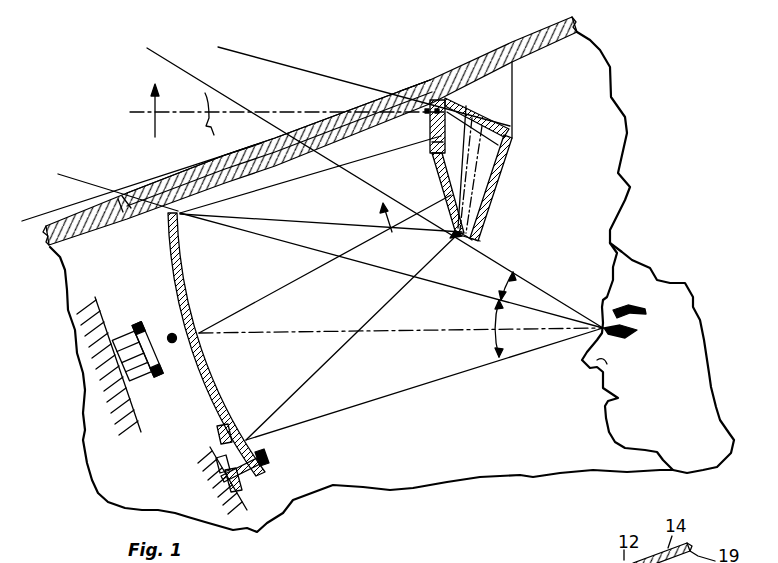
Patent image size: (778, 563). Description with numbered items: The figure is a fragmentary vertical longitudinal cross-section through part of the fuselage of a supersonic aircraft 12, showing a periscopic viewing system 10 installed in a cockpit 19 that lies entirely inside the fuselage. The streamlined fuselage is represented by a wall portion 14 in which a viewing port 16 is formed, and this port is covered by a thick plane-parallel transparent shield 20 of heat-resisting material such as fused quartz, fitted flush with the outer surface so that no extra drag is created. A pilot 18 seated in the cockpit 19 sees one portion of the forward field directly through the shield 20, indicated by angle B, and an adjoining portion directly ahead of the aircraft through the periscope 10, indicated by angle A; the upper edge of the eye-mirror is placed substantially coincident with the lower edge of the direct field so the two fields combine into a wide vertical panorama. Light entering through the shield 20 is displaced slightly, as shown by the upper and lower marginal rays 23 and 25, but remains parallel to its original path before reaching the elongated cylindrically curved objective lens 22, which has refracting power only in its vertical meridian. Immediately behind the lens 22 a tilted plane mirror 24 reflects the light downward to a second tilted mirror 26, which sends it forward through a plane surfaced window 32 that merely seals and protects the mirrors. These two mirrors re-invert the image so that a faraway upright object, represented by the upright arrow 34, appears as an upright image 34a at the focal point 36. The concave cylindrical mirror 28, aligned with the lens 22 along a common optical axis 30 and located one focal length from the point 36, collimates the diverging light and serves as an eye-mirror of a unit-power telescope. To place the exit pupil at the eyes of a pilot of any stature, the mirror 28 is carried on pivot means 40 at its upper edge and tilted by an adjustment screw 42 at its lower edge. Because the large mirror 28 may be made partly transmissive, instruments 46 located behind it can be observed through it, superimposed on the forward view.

The periscopic viewing system 10 is at (516, 179).
The aircraft 12 is at (440, 72).
The wall portion 14 is at (51, 238).
The viewing port 16 is at (123, 192).
The pilot 18 is at (636, 270).
The cockpit 19 is at (599, 66).
The transparent shield 20 is at (239, 155).
The objective lens 22 is at (430, 140).
The upper marginal ray 23 is at (280, 70).
The tilted mirror 24 is at (470, 111).
The lower marginal ray 25 is at (42, 220).
The second tilted mirror 26 is at (493, 191).
The concave cylindrical mirror 28 is at (217, 389).
The common optical axis 30 is at (291, 112).
The plane surfaced window 32 is at (443, 179).
The upright arrow 34 is at (153, 126).
The image 34a is at (392, 225).
The focal point 36 is at (378, 219).
The pivot means 40 is at (170, 336).
The adjustment screw 42 is at (268, 456).
The instruments 46 is at (144, 388).
The angle A is at (493, 346).
The angle B is at (499, 284).